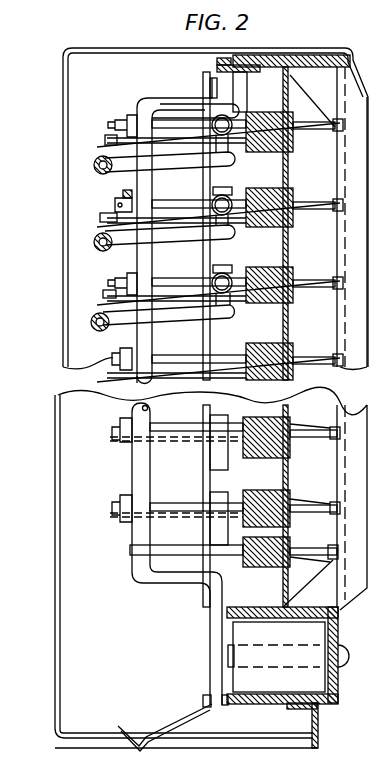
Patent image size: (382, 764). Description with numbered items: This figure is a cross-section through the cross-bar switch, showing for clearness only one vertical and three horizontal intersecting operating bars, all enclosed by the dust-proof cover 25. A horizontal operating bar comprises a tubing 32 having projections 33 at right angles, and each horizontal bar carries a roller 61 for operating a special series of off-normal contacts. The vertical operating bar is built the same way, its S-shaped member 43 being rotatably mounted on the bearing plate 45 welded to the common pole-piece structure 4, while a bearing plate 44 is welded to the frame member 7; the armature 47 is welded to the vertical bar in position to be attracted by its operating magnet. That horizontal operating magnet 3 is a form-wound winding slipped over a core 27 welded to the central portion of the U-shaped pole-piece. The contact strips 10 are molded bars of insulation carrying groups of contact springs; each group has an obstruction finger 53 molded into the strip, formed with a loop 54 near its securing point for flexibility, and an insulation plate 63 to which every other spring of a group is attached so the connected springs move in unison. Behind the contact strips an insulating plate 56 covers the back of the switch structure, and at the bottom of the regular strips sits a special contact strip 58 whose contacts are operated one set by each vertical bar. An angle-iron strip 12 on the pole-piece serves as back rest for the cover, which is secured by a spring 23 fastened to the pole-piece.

The frame member 7 is at (317, 60).
The S-shaped member 43 is at (218, 74).
The bearing plate 45 is at (250, 70).
The insulation plate 63 is at (123, 192).
The roller 61 is at (108, 212).
The obstruction finger 53 is at (99, 218).
The projections 33 is at (94, 233).
The loop 54 is at (213, 197).
The contact strip 10 is at (290, 220).
The tubing 32 is at (91, 320).
The insulating plate 56 is at (288, 325).
The special contact strip 58 is at (253, 568).
The armature 47 is at (212, 613).
The core 27 is at (232, 658).
The dust-proof cover 25 is at (58, 645).
The horizontal operating magnet 3 is at (312, 680).
The connector 44 is at (206, 706).
The common pole-piece structure 4 is at (338, 700).
The spring 23 is at (197, 718).
The angle-iron strip 12 is at (318, 733).